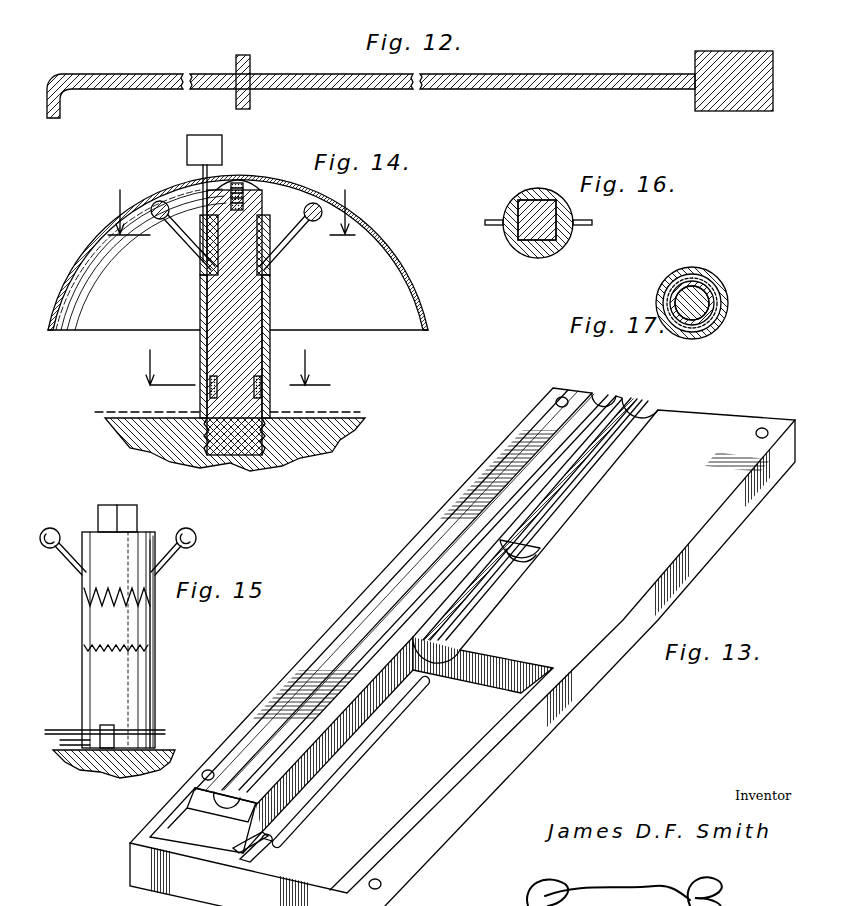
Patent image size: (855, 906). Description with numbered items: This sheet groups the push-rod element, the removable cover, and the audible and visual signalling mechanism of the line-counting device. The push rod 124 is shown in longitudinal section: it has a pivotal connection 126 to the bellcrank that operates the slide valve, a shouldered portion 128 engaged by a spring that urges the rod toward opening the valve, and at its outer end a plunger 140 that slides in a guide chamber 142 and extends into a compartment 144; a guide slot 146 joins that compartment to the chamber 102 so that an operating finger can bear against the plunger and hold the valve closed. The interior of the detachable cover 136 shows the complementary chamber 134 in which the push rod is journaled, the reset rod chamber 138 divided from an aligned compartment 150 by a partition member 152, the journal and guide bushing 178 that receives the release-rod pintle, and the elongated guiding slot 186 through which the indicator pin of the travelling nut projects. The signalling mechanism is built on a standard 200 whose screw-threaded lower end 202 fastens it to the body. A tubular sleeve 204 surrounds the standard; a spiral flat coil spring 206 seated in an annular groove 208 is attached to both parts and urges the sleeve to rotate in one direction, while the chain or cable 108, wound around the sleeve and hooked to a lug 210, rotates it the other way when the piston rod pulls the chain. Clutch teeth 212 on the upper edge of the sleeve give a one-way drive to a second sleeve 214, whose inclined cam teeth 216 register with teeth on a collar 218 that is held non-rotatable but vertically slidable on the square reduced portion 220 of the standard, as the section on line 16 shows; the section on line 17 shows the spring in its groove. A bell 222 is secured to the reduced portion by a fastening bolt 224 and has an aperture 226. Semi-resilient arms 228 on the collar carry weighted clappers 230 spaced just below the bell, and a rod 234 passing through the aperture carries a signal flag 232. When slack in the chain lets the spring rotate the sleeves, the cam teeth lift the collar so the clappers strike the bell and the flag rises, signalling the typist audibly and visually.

In FIG. 13, the chamber 102 is at (430, 790).
In FIG. 15, the chain or cable 108 is at (60, 732).
In FIG. 12, the push rod 124 is at (283, 80).
In FIG. 12, the pivotal connection 126 is at (58, 112).
In FIG. 12, the shouldered portion 128 is at (244, 55).
In FIG. 13, the complementary chamber 134 is at (392, 600).
In FIG. 13, the detachable cover 136 is at (598, 680).
In FIG. 13, the reset rod chamber 138 is at (490, 605).
In FIG. 12, the plunger 140 is at (725, 96).
In FIG. 13, the guide chamber 142 is at (228, 778).
In FIG. 13, the compartment 144 is at (190, 815).
In FIG. 13, the guide slot 146 is at (250, 845).
In FIG. 13, the compartment 150 is at (595, 490).
In FIG. 13, the partition member 152 is at (540, 560).
In FIG. 13, the journal and guide bushing 178 is at (272, 848).
In FIG. 13, the elongated guiding slot 186 is at (392, 722).
In FIG. 14, the standard 200 is at (270, 335).
In FIG. 17, the standard 200 is at (726, 290).
In FIG. 14, the screw-threaded lower end 202 is at (300, 420).
In FIG. 14, the tubular sleeve 204 is at (200, 330).
In FIG. 14, the spiral flat coil spring 206 is at (262, 388).
In FIG. 17, the spiral flat coil spring 206 is at (700, 280).
In FIG. 14, the annular groove or channel 208 is at (210, 398).
In FIG. 17, the annular groove or channel 208 is at (668, 298).
In FIG. 15, the lug 210 is at (108, 725).
In FIG. 15, the clutch teeth 212 is at (84, 648).
In FIG. 14, the second sleeve 214 is at (270, 296).
In FIG. 15, the second sleeve 214 is at (150, 625).
In FIG. 15, the cam teeth 216 is at (112, 585).
In FIG. 14, the collar or sleeve 218 is at (200, 245).
In FIG. 16, the collar or sleeve 218 is at (530, 250).
In FIG. 15, the collar or sleeve 218 is at (143, 545).
In FIG. 14, the reduced portion 220 is at (243, 192).
In FIG. 16, the reduced portion 220 is at (540, 205).
In FIG. 15, the reduced portion 220 is at (104, 512).
In FIG. 14, the bell 222 is at (395, 225).
In FIG. 14, the fastening bolt 224 is at (240, 180).
In FIG. 14, the aperture 226 is at (196, 170).
In FIG. 14, the semi-resilient arms 228 is at (280, 250).
In FIG. 16, the semi-resilient arms 228 is at (490, 225).
In FIG. 15, the semi-resilient arms 228 is at (170, 560).
In FIG. 14, the clappers 230 is at (305, 207).
In FIG. 15, the clappers 230 is at (195, 532).
In FIG. 14, the signal flag 232 is at (205, 135).
In FIG. 14, the rod 234 is at (200, 190).
In FIG. 14, the section line 16— 16 is at (231, 208).
In FIG. 14, the section line 17— 17 is at (232, 363).